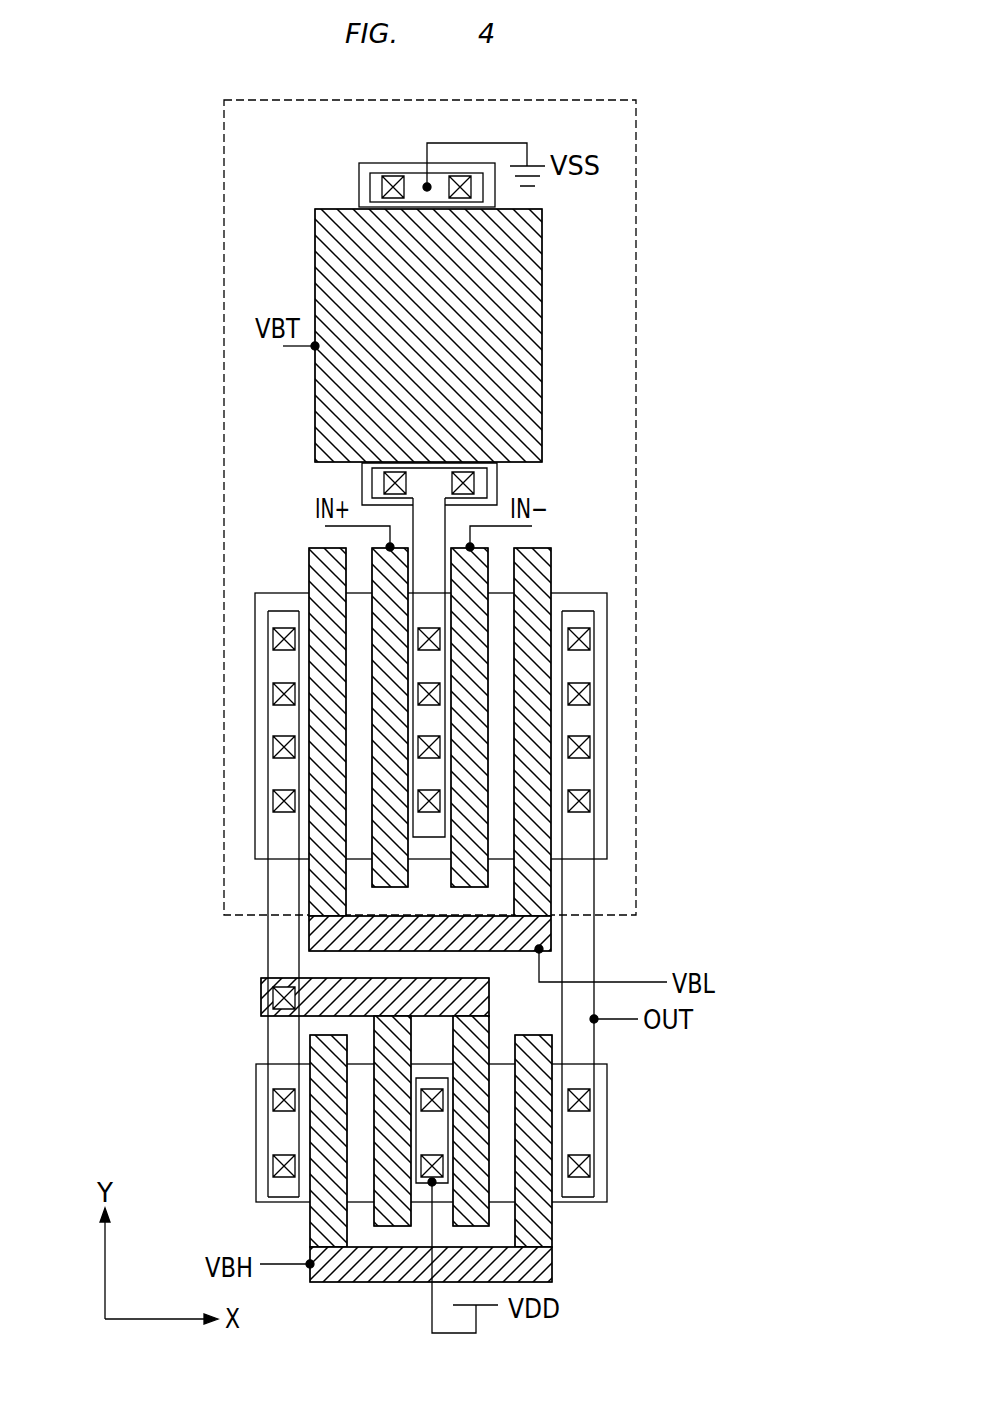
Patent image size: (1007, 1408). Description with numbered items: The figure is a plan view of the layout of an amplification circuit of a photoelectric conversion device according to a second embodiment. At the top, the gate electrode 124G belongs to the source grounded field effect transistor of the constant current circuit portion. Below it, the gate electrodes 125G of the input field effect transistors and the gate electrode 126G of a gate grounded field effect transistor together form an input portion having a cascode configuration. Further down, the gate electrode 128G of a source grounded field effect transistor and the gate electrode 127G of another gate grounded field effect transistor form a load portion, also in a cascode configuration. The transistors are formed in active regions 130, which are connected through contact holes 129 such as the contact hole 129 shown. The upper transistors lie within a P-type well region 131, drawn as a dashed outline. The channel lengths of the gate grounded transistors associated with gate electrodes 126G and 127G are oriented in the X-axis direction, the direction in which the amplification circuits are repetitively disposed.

The gate electrode of source grounded field effect transistor 124G is at (327, 410).
The gate electrode of input field effect transistor 125G is at (452, 582).
The gate electrode of gate grounded field effect transistor 126G is at (547, 888).
The gate electrode of gate grounded field effect transistor 127G is at (552, 1255).
The gate electrode of source grounded field effect transistor 128G is at (489, 1001).
The contact hole 129 is at (590, 1098).
The active region 130 is at (498, 482).
The P-type well region 131 is at (637, 738).